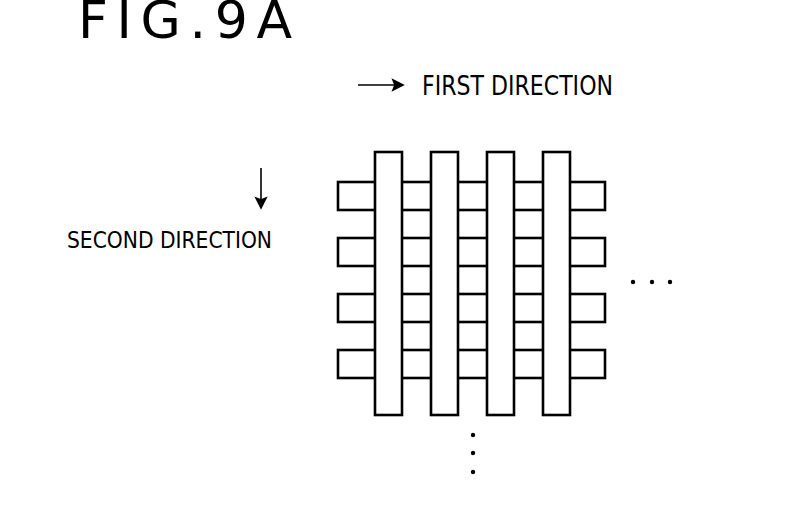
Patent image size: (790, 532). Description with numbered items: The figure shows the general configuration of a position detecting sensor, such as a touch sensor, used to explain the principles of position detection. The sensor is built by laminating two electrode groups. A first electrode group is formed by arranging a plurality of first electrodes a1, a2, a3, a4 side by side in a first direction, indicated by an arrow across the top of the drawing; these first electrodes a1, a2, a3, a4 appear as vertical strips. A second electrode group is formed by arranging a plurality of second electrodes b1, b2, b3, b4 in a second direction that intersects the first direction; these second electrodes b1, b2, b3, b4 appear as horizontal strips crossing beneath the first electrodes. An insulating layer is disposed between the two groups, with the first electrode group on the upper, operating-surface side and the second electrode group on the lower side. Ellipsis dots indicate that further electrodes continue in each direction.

The first electrode a1 is at (388, 266).
The first electrode a2 is at (444, 266).
The first electrode a3 is at (500, 266).
The first electrode a4 is at (556, 266).
The second electrode b1 is at (449, 197).
The second electrode b2 is at (449, 253).
The second electrode b3 is at (449, 309).
The second electrode b4 is at (449, 366).